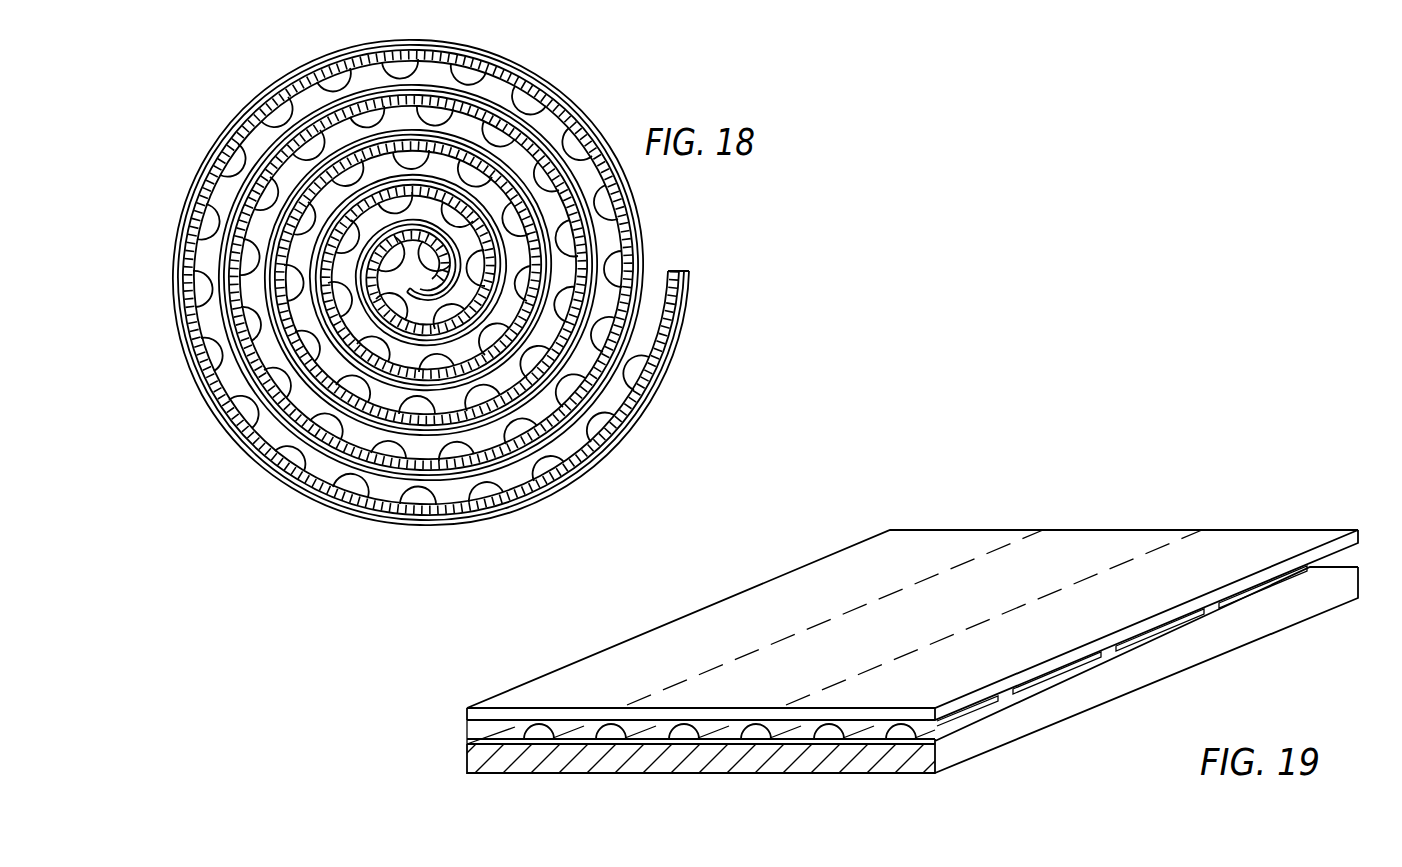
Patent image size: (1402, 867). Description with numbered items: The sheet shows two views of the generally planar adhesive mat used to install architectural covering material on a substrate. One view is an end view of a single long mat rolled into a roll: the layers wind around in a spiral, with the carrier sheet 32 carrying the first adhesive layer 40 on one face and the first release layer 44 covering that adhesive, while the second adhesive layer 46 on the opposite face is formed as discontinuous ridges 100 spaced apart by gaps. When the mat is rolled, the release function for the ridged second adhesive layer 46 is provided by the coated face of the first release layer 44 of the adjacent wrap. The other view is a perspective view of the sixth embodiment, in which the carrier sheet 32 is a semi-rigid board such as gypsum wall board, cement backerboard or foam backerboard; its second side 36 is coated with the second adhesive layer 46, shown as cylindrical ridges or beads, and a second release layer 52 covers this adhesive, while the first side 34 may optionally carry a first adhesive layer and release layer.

In FIG. 18, the carrier sheet 32 is at (660, 337).
In FIG. 19, the carrier sheet 32 is at (466, 744).
In FIG. 19, the first side 34 is at (517, 774).
In FIG. 19, the second side 36 is at (513, 736).
In FIG. 18, the first adhesive layer 40 is at (658, 370).
In FIG. 18, the first release layer 44 is at (657, 396).
In FIG. 18, the second adhesive layer 46 is at (664, 274).
In FIG. 19, the second adhesive layer 46 is at (466, 722).
In FIG. 19, the second release layer 52 is at (940, 712).
In FIG. 19, the discontinuous ridges 100 is at (574, 736).